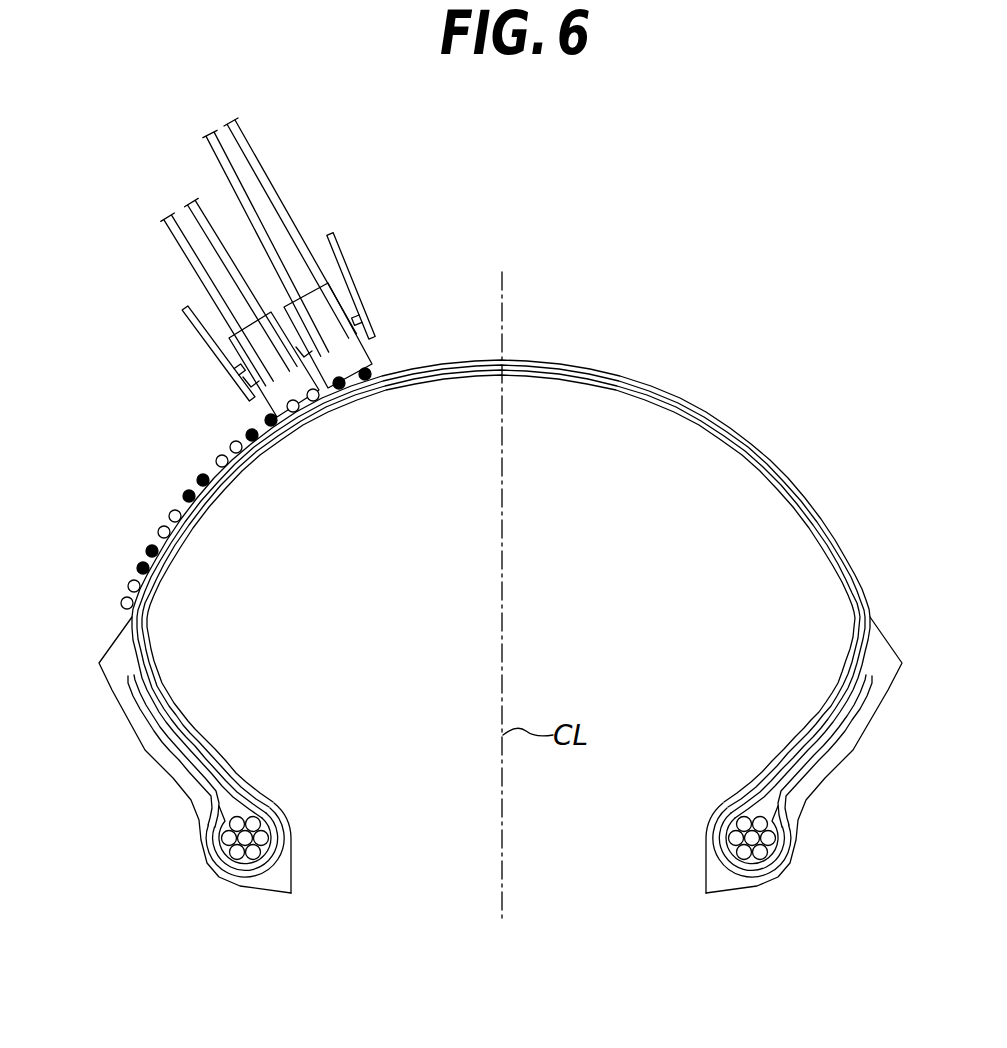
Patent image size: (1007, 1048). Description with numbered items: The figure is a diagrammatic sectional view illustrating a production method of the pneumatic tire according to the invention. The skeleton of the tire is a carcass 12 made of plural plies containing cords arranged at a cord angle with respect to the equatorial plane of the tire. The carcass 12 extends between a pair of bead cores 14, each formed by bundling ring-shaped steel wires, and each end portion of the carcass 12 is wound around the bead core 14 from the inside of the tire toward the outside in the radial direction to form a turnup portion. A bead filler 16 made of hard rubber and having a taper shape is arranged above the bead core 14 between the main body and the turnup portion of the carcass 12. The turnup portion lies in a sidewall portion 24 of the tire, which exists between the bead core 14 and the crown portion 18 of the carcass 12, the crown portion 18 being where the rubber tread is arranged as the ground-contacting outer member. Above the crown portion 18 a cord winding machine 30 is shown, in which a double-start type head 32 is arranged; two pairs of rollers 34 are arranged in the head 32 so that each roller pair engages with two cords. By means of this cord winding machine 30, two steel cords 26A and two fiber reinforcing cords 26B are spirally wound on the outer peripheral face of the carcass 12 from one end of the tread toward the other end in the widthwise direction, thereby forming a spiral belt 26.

The carcass 12 is at (712, 418).
The bead core 14 is at (767, 840).
The bead filler 16 is at (765, 801).
The crown portion 18 is at (494, 383).
The sidewall portion 24 is at (870, 723).
The spiral belt 26 is at (97, 87).
The steel cords 26A is at (186, 203).
The fiber reinforcing cords 26B is at (212, 145).
The cord winding machine 30 is at (298, 178).
The double-start type head 32 is at (352, 270).
The rollers 34 is at (374, 362).